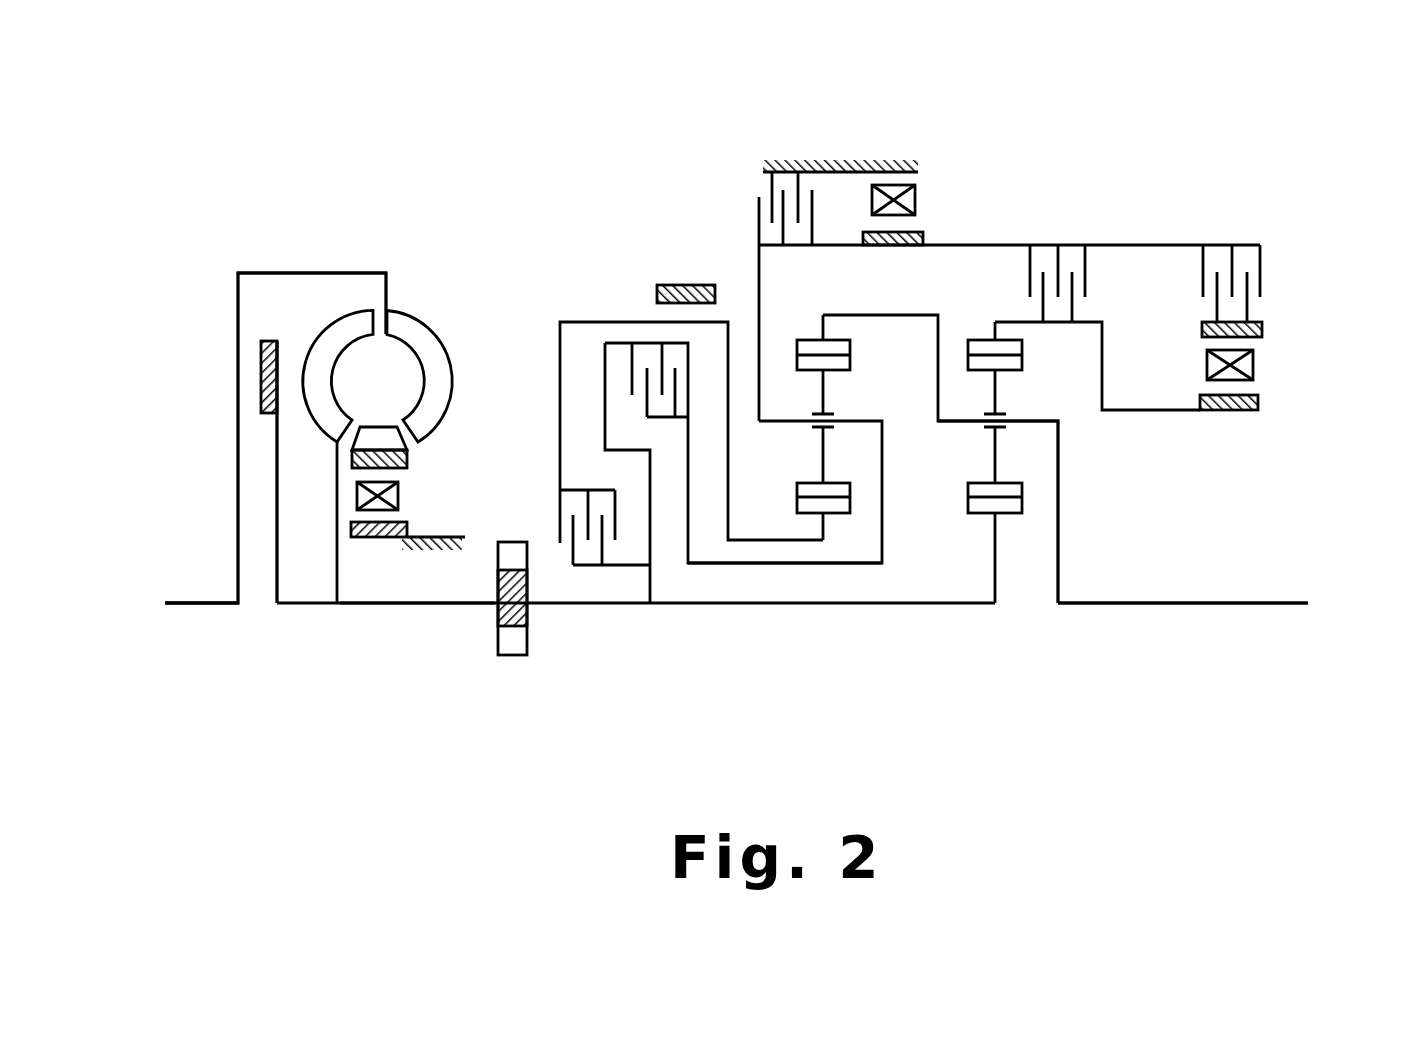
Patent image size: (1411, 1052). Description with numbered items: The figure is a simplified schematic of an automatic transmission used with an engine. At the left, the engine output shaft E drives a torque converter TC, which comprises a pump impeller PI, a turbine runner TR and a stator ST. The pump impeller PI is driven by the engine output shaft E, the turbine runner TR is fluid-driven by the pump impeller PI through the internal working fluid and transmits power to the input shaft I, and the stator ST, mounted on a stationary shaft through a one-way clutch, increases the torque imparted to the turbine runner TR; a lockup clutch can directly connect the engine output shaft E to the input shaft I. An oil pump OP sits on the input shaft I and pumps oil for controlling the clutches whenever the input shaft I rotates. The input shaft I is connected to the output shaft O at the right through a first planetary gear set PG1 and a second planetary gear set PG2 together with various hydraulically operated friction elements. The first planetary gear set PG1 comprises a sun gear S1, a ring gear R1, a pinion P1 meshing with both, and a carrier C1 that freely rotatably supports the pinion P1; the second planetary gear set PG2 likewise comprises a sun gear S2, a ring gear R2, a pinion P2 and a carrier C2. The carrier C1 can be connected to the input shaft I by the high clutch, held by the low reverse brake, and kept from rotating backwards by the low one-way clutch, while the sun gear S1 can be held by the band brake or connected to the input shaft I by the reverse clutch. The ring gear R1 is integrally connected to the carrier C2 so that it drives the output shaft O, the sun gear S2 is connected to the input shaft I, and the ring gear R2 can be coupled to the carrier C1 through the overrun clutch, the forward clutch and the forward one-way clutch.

The torque converter TC is at (358, 250).
The turbine runner TR is at (330, 350).
The pump impeller PI is at (430, 350).
The stator ST is at (407, 457).
The engine output shaft E is at (208, 604).
The input shaft I is at (447, 605).
The oil pump OP is at (517, 657).
The ring gear R1 is at (802, 340).
The ring gear R2 is at (973, 340).
The pinion P1 is at (851, 365).
The pinion P2 is at (1022, 365).
The carrier C1 is at (797, 421).
The carrier C2 is at (970, 421).
The sun gear S1 is at (800, 513).
The sun gear S2 is at (977, 513).
The first planetary gear set PG1 is at (838, 532).
The second planetary gear set PG2 is at (1006, 545).
The output shaft O is at (1233, 606).